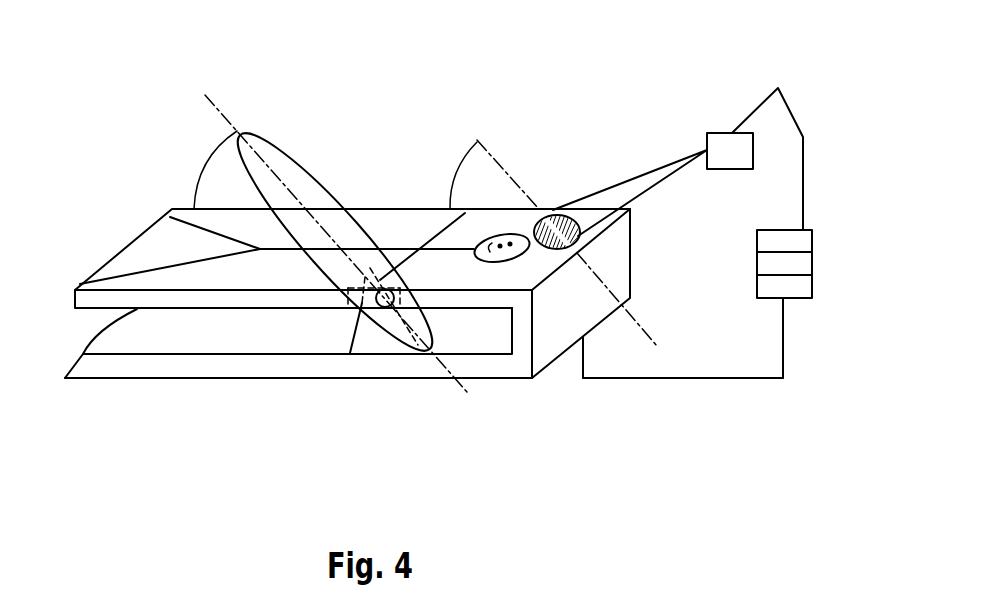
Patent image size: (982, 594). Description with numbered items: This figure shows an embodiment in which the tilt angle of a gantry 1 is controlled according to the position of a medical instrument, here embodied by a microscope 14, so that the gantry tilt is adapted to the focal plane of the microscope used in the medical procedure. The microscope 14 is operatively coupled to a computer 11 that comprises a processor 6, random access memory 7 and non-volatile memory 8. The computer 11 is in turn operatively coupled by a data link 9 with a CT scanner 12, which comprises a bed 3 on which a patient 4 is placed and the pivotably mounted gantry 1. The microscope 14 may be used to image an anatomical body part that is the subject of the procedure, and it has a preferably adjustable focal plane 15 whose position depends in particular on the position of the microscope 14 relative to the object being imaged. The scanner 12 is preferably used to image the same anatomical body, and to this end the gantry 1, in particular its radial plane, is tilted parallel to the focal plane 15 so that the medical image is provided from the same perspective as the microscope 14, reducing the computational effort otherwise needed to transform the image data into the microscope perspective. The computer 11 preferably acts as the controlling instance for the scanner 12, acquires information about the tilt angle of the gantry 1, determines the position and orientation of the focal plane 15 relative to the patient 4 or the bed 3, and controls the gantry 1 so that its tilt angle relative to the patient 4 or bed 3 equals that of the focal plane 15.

The gantry 1 is at (287, 152).
The bed 3 is at (77, 296).
The patient 4 is at (173, 266).
The processor 6 is at (767, 243).
The random access memory 7 is at (766, 263).
The non-volatile memory 8 is at (766, 285).
The data link 9 is at (657, 380).
The computer 11 is at (712, 231).
The CT scanner 12 is at (240, 421).
The microscope 14 is at (714, 109).
The focal plane 15 is at (558, 215).